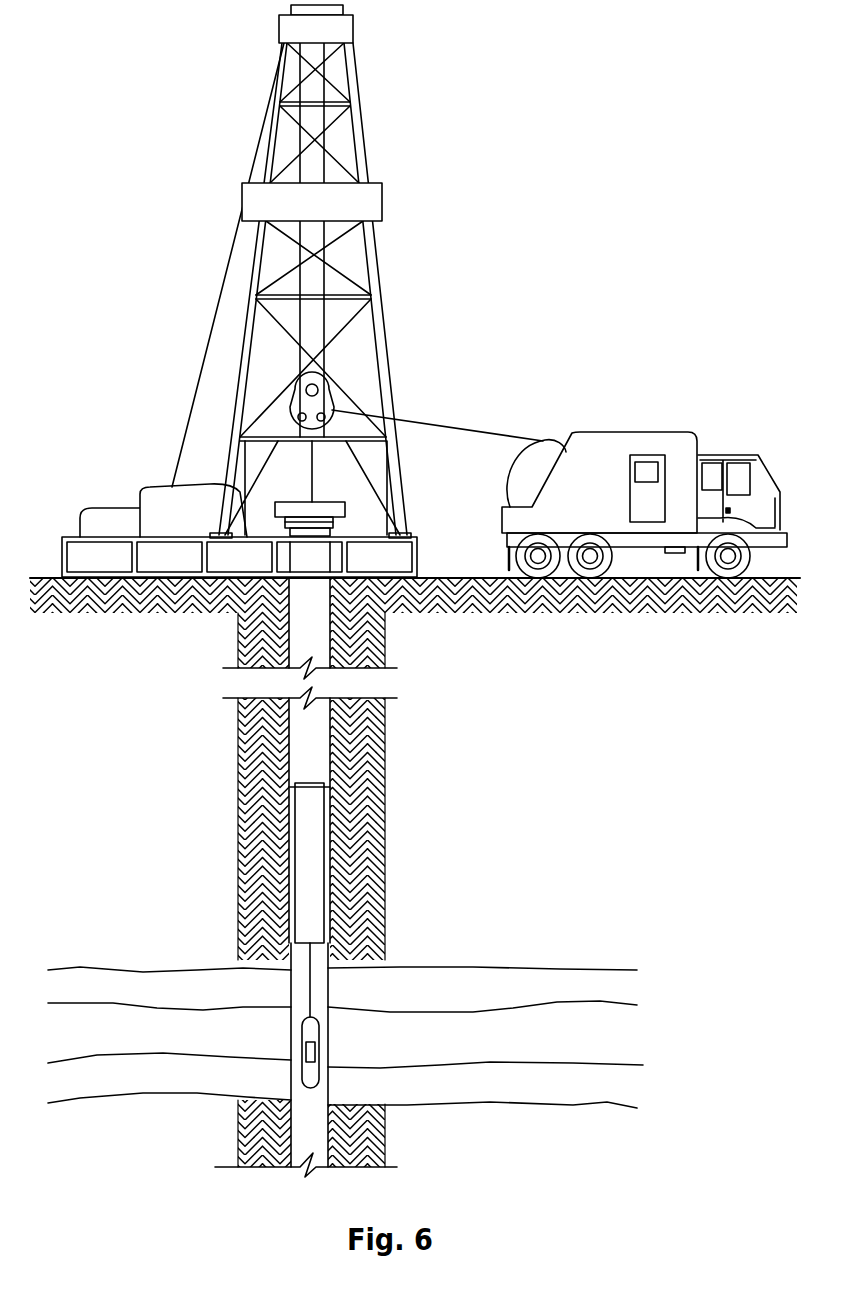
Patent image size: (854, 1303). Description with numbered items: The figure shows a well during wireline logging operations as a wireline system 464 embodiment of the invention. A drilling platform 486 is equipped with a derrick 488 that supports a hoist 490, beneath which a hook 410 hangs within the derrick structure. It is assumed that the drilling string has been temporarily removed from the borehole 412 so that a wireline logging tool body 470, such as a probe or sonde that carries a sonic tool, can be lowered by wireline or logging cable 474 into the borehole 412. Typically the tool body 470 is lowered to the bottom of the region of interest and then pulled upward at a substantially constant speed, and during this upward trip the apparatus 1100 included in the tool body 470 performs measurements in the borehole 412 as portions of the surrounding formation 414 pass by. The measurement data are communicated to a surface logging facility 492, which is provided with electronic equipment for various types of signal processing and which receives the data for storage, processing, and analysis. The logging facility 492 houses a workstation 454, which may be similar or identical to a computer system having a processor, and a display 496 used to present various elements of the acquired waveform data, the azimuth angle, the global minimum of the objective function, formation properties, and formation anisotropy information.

The wireline system 464 is at (578, 214).
The derrick 488 is at (407, 528).
The hoist 490 is at (316, 376).
The logging cable 474 is at (432, 428).
The hook 410 is at (343, 502).
The drilling platform 486 is at (418, 574).
The surface logging facility 492 is at (592, 432).
The workstation 454 is at (630, 497).
The display 496 is at (648, 462).
The borehole 412 is at (291, 976).
The tool body 470 is at (318, 1028).
The apparatus 1100 is at (316, 1048).
The formation 414 is at (652, 960).